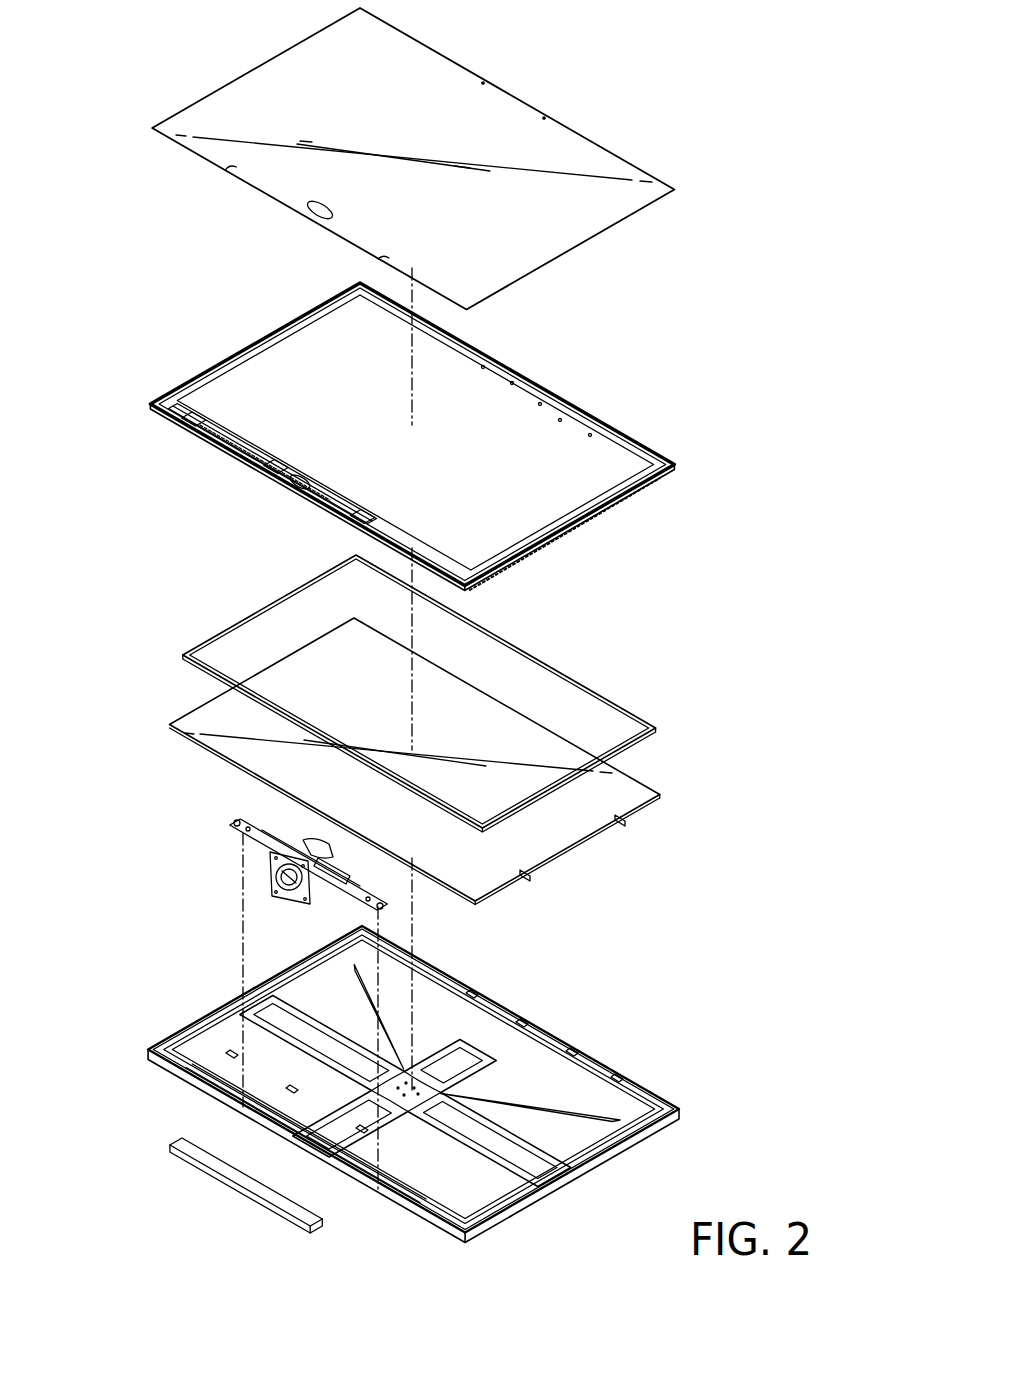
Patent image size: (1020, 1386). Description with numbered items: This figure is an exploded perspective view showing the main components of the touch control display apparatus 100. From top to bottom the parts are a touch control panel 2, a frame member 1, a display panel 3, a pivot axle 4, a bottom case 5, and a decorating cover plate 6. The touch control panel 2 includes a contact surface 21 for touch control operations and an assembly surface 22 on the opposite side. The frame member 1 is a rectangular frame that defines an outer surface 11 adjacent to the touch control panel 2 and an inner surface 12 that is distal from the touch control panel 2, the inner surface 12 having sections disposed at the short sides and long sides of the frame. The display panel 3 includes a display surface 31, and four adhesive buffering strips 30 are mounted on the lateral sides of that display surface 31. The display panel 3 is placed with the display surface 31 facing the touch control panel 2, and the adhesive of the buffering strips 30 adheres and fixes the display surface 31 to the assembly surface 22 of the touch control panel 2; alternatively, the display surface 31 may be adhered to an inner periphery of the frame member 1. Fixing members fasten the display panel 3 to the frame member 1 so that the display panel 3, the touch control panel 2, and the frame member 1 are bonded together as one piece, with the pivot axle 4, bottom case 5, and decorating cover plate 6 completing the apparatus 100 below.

The display device 100 is at (95, 85).
The frame member 1 is at (220, 335).
The outer surface 11 is at (232, 438).
The inner surface 12 is at (212, 447).
The touch control panel 2 is at (540, 98).
The contact surface 21 is at (555, 230).
The assembly surface 22 is at (556, 265).
The display panel 3 is at (170, 672).
The adhesive buffering strips 30 is at (203, 655).
The display surface 31 is at (493, 880).
The pivot axle 4 is at (208, 822).
The bottom case 5 is at (186, 1062).
The decorating cover plate 6 is at (227, 1160).